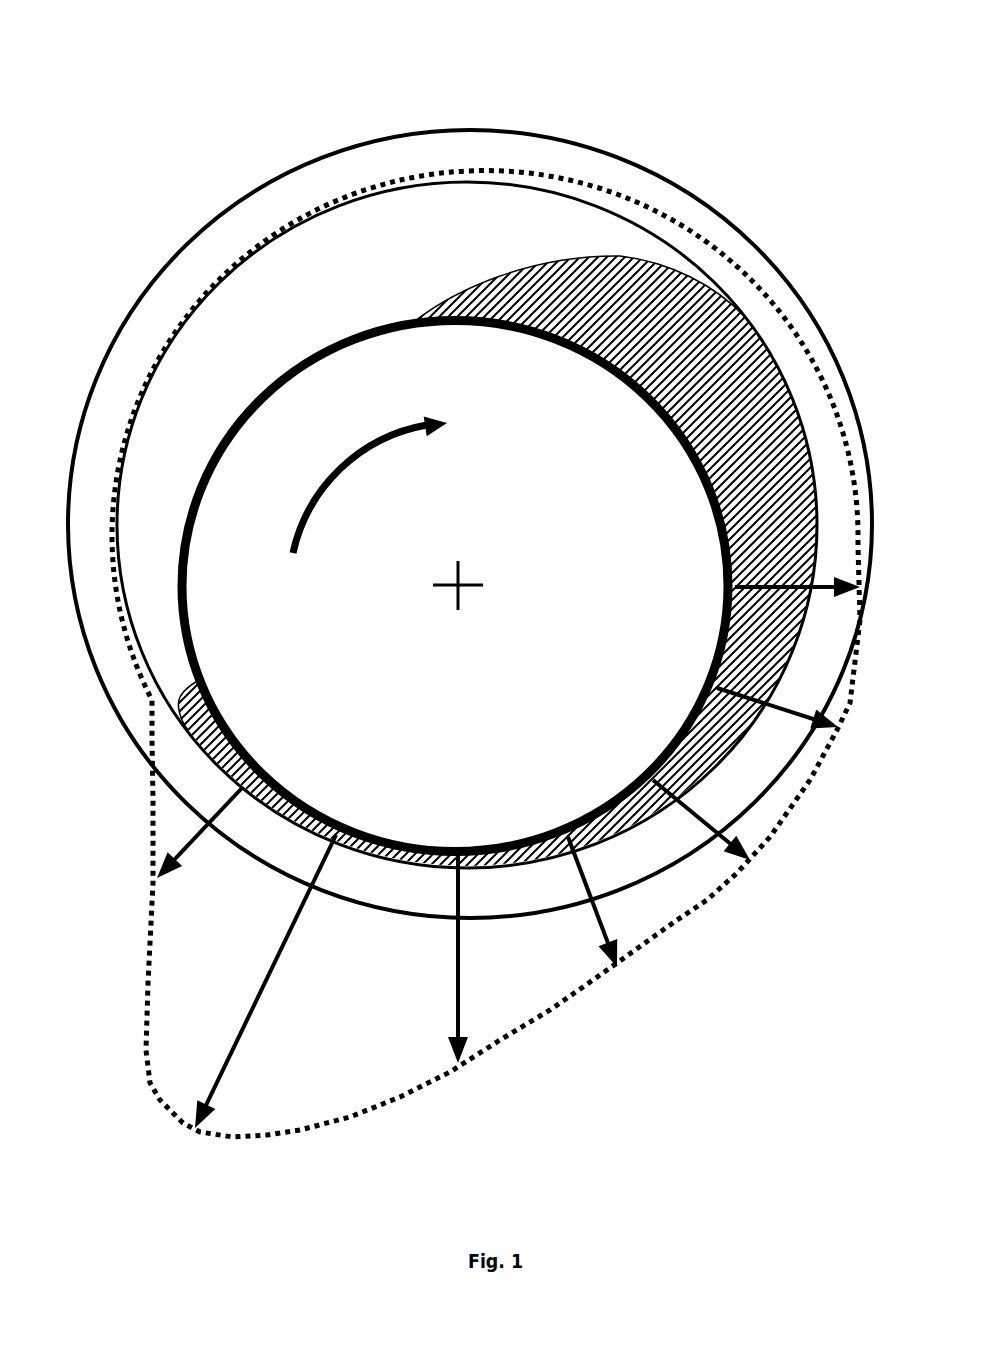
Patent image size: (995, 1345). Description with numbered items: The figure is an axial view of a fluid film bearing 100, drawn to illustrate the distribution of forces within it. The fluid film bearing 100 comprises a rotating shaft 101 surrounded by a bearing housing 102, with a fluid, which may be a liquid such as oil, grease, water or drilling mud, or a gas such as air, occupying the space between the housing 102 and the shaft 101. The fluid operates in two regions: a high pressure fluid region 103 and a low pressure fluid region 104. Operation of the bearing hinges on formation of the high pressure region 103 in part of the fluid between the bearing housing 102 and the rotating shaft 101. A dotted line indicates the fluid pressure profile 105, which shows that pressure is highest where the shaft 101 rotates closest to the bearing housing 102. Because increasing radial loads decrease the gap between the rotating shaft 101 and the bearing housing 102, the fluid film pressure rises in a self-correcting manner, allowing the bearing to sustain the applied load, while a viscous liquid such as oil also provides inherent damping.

The fluid film bearing 100 is at (125, 48).
The rotating shaft 101 is at (280, 403).
The bearing housing 102 is at (140, 348).
The high pressure fluid region 103 is at (625, 817).
The low pressure fluid region 104 is at (527, 211).
The fluid pressure profile 105 is at (357, 1113).